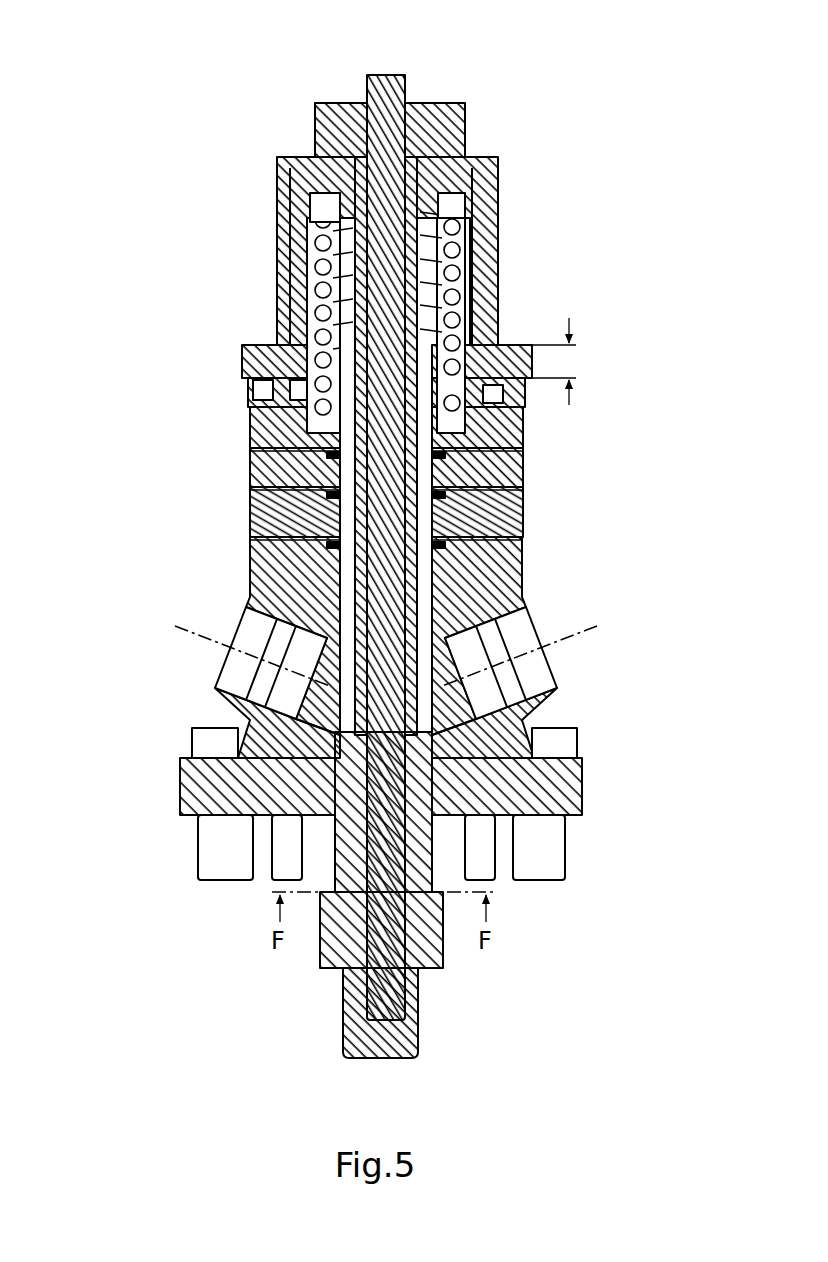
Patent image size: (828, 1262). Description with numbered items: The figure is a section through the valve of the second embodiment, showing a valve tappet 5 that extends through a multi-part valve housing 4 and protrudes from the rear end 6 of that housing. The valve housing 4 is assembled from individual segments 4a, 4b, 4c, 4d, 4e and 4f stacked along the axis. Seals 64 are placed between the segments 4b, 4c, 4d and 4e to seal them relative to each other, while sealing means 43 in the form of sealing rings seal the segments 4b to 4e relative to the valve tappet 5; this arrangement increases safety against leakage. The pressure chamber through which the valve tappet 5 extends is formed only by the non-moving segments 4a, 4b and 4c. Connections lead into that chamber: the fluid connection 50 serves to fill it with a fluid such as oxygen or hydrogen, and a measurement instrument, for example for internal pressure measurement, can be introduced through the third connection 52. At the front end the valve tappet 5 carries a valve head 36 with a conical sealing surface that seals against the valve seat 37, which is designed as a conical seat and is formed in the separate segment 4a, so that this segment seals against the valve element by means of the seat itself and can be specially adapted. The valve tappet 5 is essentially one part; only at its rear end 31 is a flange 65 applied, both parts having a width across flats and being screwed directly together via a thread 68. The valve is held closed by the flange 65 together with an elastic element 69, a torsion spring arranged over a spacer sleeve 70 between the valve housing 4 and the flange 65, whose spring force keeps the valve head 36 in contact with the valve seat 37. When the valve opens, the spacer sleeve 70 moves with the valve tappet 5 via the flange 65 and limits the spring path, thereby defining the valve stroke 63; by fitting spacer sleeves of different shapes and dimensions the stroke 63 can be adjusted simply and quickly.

The rear end 31 is at (399, 72).
The valve tappet 5 is at (406, 85).
The flange 65 is at (447, 127).
The thread 68 is at (362, 152).
The rear end 6 is at (520, 163).
The spacer sleeve 70 is at (302, 180).
The elastic element 69 is at (317, 250).
The sealing means 43 is at (520, 519).
The valve stroke 63 is at (569, 361).
The individual segment 4f is at (242, 358).
The individual segment 4e is at (262, 432).
The individual segment 4d is at (262, 475).
The individual segment 4c is at (262, 518).
The valve housing 4 is at (178, 564).
The seals 64 is at (520, 550).
The fluid connection 50 is at (247, 617).
The third connection 52 is at (540, 682).
The individual segment 4b is at (200, 795).
The individual segment 4a is at (322, 950).
The valve seat 37 is at (342, 1020).
The valve head 36 is at (348, 1040).